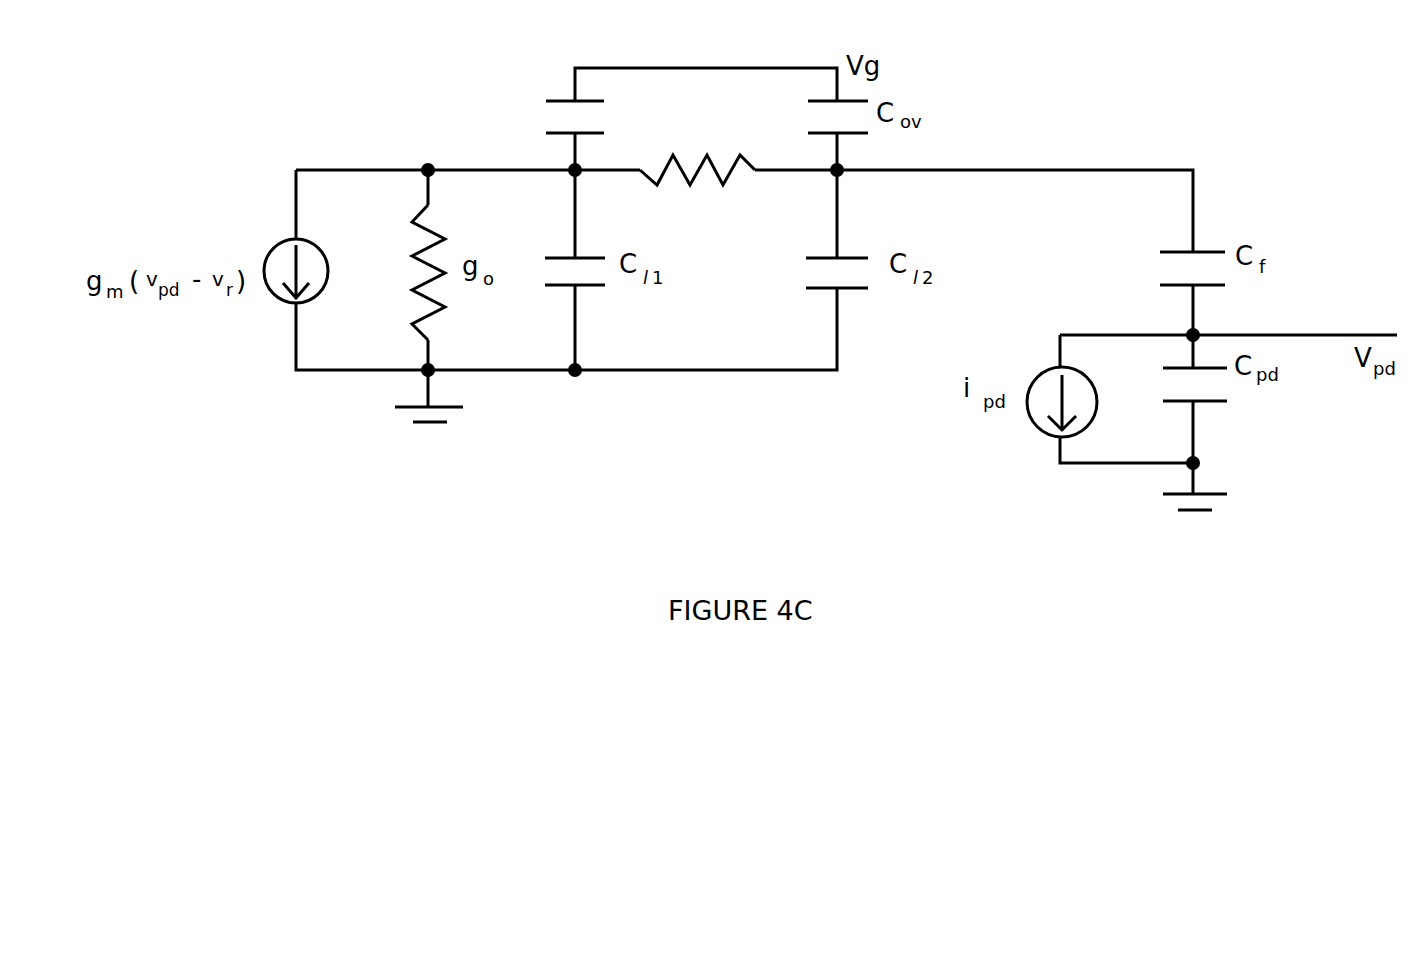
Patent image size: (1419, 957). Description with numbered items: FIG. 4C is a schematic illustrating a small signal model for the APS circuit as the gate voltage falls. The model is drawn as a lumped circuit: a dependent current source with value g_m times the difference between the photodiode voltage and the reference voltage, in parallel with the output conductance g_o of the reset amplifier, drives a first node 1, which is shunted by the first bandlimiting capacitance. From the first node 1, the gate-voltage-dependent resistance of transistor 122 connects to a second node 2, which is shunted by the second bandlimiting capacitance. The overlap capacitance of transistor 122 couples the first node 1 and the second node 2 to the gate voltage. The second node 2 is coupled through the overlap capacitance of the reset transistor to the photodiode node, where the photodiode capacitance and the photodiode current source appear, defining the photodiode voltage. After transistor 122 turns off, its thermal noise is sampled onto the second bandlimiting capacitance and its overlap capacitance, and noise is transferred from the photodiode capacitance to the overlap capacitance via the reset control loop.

The transistor 122 is at (722, 201).
The node voltage V1 1 is at (549, 187).
The node voltage V2 2 is at (859, 186).